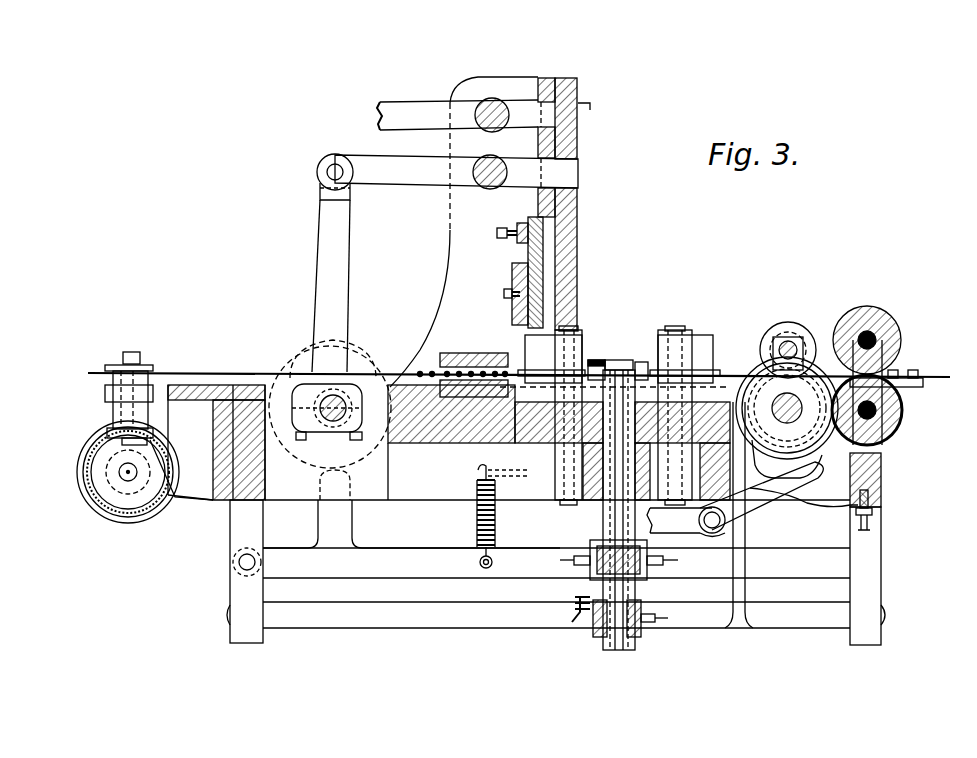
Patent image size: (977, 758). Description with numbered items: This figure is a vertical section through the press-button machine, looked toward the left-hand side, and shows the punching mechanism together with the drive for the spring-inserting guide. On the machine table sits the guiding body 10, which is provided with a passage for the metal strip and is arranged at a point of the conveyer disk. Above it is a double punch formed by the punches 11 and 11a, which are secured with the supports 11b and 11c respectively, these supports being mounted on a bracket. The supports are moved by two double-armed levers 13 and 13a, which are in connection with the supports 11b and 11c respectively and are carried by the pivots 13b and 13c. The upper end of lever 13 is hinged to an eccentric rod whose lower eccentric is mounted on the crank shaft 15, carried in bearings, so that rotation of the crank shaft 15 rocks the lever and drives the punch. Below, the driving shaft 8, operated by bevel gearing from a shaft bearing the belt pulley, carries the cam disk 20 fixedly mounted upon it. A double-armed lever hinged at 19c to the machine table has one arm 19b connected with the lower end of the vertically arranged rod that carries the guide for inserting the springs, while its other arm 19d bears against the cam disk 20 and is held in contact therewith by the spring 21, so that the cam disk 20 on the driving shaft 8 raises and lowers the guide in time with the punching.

The driving shaft 8 is at (790, 405).
The guiding body 10 is at (455, 352).
The double punch 11 is at (533, 247).
The double punch 11a is at (514, 265).
The support 11b is at (556, 80).
The support 11c is at (605, 110).
The double-armed lever 13 is at (402, 112).
The double-armed lever 13a is at (417, 180).
The pivot 13b is at (497, 103).
The pivot 13c is at (492, 187).
The crank shaft 15 is at (340, 412).
The arm of double-armed lever 19b is at (688, 530).
The hinge 19c is at (725, 530).
The arm of double-armed lever 19d is at (760, 503).
The cam disk 20 is at (822, 452).
The spring 21 is at (811, 498).